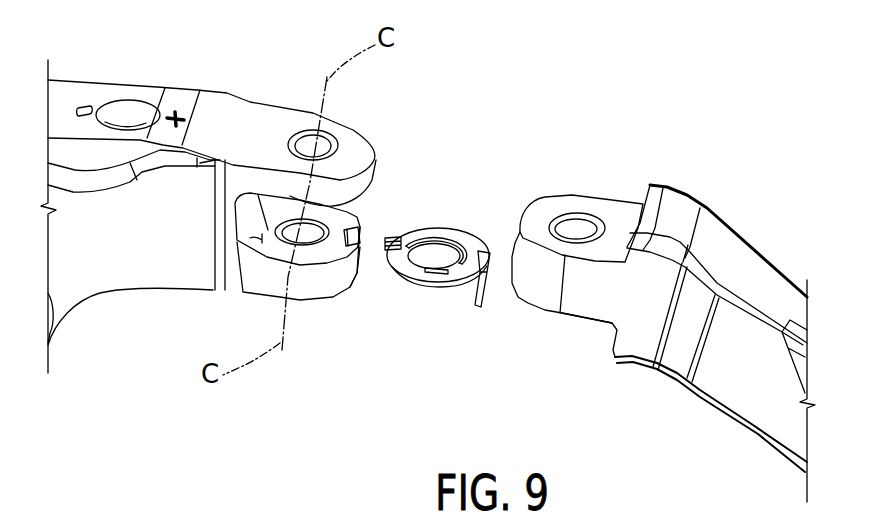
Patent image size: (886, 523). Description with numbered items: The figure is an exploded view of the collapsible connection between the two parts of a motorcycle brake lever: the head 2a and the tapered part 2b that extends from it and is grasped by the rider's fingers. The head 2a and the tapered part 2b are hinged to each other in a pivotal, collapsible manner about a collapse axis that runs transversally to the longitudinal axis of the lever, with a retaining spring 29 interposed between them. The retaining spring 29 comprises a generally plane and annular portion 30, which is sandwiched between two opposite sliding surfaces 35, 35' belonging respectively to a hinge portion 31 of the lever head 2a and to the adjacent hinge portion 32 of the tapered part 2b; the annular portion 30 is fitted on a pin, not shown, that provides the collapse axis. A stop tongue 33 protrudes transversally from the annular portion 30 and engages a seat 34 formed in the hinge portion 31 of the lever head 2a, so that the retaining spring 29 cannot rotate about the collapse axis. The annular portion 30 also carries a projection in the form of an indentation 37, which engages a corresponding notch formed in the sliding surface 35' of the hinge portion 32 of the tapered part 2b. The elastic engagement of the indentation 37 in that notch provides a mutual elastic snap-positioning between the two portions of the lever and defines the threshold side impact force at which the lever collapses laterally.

The head 2a is at (238, 127).
The tapered part 2b is at (712, 239).
The retaining spring 29 is at (445, 227).
The annular portion 30 is at (425, 268).
The hinge portion 31 is at (256, 277).
The hinge portion 32 is at (543, 311).
The stop tongue 33 is at (477, 315).
The seat 34 is at (360, 277).
The sliding surface 35 is at (185, 251).
The sliding surface 35' is at (571, 359).
The indentation 37 is at (392, 244).